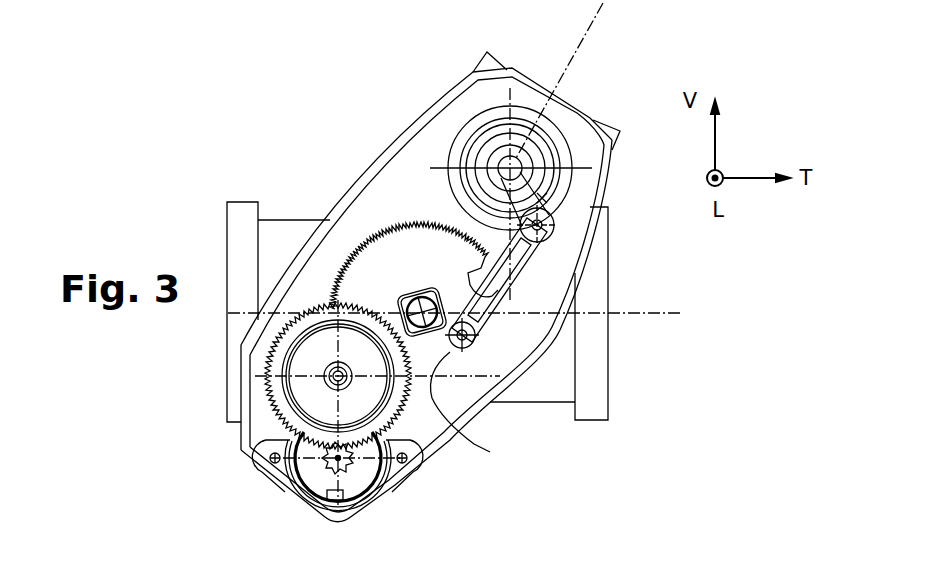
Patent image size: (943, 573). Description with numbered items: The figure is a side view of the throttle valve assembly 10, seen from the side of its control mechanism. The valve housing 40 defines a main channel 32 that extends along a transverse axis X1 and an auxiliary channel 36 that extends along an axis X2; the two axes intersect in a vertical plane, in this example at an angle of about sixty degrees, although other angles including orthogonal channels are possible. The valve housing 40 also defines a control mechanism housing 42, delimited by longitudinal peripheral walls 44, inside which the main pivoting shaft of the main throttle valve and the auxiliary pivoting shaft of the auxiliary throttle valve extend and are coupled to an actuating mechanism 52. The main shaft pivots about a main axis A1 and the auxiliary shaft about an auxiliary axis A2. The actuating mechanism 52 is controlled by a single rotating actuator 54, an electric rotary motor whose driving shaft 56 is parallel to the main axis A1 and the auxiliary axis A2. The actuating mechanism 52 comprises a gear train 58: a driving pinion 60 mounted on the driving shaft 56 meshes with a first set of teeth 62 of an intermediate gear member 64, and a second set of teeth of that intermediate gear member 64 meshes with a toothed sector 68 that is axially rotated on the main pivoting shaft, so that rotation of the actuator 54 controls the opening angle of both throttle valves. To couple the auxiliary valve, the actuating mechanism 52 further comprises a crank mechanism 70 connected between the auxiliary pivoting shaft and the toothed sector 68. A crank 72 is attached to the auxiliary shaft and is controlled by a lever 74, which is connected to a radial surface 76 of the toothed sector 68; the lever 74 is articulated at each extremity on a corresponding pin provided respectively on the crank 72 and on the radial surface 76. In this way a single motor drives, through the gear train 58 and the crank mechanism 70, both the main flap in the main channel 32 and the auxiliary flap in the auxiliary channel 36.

The throttle valve assembly 10 is at (288, 97).
The main channel 32 is at (612, 296).
The auxiliary channel 36 is at (537, 78).
The valve housing 40 is at (283, 212).
The control mechanism housing 42 is at (336, 198).
The longitudinal peripheral walls 44 is at (454, 462).
The actuating mechanism 52 is at (420, 150).
The rotating actuator 54 is at (292, 476).
The driving shaft 56 is at (364, 494).
The gear train 58 is at (260, 368).
The driving pinion 60 is at (297, 492).
The first set of teeth 62 is at (256, 395).
The intermediate gear member 64 is at (313, 361).
The toothed sector 68 is at (386, 225).
The crank mechanism 70 is at (550, 256).
The crank 72 is at (560, 222).
The lever 74 is at (512, 300).
The radial surface 76 is at (357, 277).
The main axis A1 is at (437, 350).
The auxiliary axis A2 is at (508, 166).
The transverse axis X1 is at (668, 313).
The axis of the auxiliary channel X2 is at (600, 12).